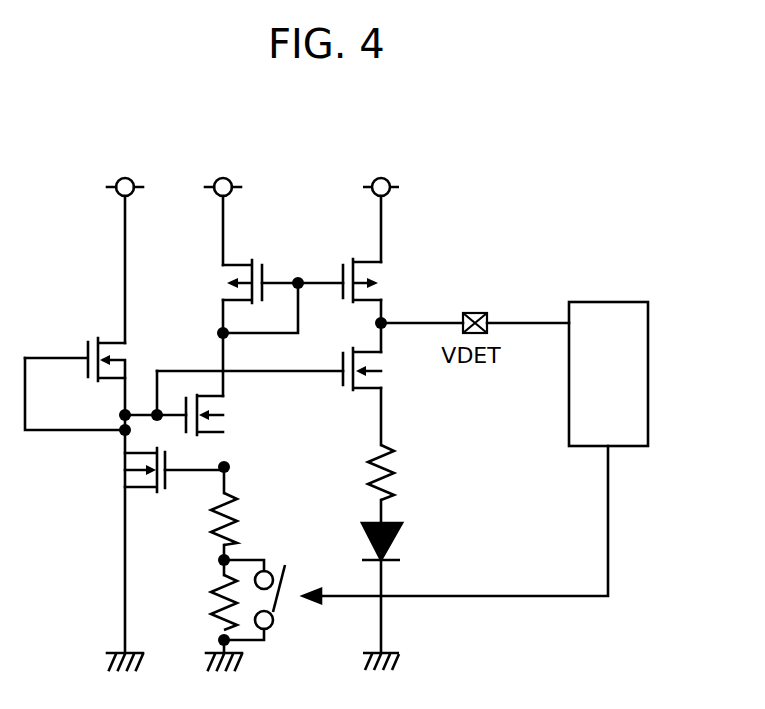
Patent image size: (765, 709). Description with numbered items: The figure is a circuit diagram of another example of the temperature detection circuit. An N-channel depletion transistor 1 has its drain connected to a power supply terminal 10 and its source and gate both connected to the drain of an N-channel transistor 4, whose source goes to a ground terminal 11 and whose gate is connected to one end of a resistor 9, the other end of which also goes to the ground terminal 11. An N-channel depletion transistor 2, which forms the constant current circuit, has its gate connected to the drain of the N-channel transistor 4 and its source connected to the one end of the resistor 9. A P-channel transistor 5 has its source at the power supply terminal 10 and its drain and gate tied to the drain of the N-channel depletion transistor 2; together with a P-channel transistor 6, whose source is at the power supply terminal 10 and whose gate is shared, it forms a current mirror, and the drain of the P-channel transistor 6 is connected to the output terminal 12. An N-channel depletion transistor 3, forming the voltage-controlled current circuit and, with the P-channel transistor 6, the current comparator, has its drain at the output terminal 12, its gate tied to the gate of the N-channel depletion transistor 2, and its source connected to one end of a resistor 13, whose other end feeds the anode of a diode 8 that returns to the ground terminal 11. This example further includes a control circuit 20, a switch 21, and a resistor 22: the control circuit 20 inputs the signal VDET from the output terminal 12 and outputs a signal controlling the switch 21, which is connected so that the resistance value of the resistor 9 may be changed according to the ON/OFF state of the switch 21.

The N-channel depletion transistor 1 is at (88, 344).
The N-channel depletion transistor 2 is at (230, 420).
The N-channel depletion transistor 3 is at (392, 377).
The N-channel transistor 4 is at (126, 470).
The P-channel transistor 5 is at (252, 260).
The P-channel transistor 6 is at (388, 283).
The diode 8 is at (398, 542).
The resistor 9 is at (240, 510).
The power supply terminal 10 is at (381, 174).
The ground terminal 11 is at (381, 677).
The output terminal 12 is at (475, 310).
The resistor 13 is at (402, 465).
The control circuit 20 is at (595, 302).
The switch 21 is at (277, 605).
The resistor 22 is at (215, 602).